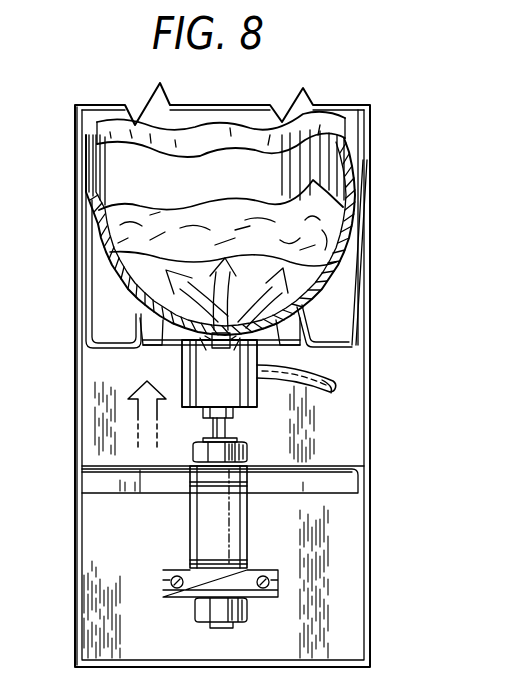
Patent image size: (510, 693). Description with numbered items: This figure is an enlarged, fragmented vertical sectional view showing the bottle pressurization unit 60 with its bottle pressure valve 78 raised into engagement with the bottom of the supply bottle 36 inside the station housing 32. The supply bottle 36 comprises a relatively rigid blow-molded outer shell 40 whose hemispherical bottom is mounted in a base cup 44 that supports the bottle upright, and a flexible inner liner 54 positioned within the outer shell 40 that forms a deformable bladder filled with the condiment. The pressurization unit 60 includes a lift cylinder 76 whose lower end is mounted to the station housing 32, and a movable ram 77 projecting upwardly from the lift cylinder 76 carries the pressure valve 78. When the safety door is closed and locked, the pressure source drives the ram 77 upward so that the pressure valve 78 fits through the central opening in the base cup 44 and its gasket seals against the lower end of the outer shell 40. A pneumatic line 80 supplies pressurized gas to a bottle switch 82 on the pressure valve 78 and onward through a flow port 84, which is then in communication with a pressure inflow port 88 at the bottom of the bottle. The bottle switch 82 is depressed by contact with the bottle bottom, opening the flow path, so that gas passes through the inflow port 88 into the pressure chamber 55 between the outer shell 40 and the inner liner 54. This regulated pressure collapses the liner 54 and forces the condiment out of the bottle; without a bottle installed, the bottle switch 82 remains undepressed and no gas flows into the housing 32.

The station housing 32 is at (370, 540).
The supply bottle 36 is at (343, 112).
The outer shell 40 is at (342, 165).
The base cup 44 is at (358, 308).
The flexible inner liner 54 is at (320, 237).
The pressure chamber 55 is at (155, 287).
The bottle pressurization unit 60 is at (143, 582).
The lift cylinder 76 is at (200, 526).
The movable ram 77 is at (226, 428).
The bottle pressure valve 78 is at (203, 405).
The pneumatic line 80 is at (310, 392).
The bottle switch 82 is at (304, 369).
The flow port 84 is at (218, 352).
The pressure inflow port 88 is at (227, 294).